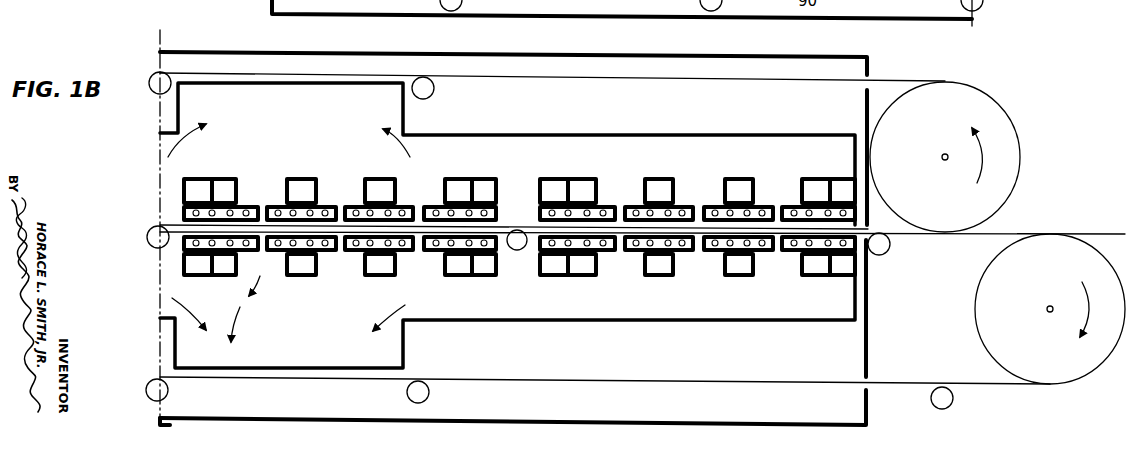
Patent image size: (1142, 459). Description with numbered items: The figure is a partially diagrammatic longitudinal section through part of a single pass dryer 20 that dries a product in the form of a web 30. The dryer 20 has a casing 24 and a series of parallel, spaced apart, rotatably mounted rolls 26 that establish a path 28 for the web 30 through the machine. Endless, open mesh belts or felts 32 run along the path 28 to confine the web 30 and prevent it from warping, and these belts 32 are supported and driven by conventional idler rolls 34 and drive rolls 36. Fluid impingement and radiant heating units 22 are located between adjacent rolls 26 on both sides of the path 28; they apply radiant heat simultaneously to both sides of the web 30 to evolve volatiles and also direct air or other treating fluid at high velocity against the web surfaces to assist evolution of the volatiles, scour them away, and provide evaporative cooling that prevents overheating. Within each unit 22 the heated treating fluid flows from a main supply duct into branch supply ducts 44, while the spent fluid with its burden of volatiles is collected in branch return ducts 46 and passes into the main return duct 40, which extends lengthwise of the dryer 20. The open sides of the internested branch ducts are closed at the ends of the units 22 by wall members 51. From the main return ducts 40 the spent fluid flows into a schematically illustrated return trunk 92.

The single pass dryer 20 is at (1032, 92).
The fluid impingement and radiant heating unit 22 is at (622, 127).
The casing 24 is at (701, 427).
The roll 26 is at (150, 238).
The path 28 is at (532, 224).
The web 30 is at (1107, 233).
The belt 32 is at (757, 83).
The idler roll 34 is at (429, 97).
The drive roll 36 is at (1005, 141).
The main return duct 40 is at (346, 155).
The branch supply duct 44 is at (652, 182).
The branch return duct 46 is at (773, 195).
The wall member 51 is at (182, 197).
The return trunk 92 is at (200, 90).